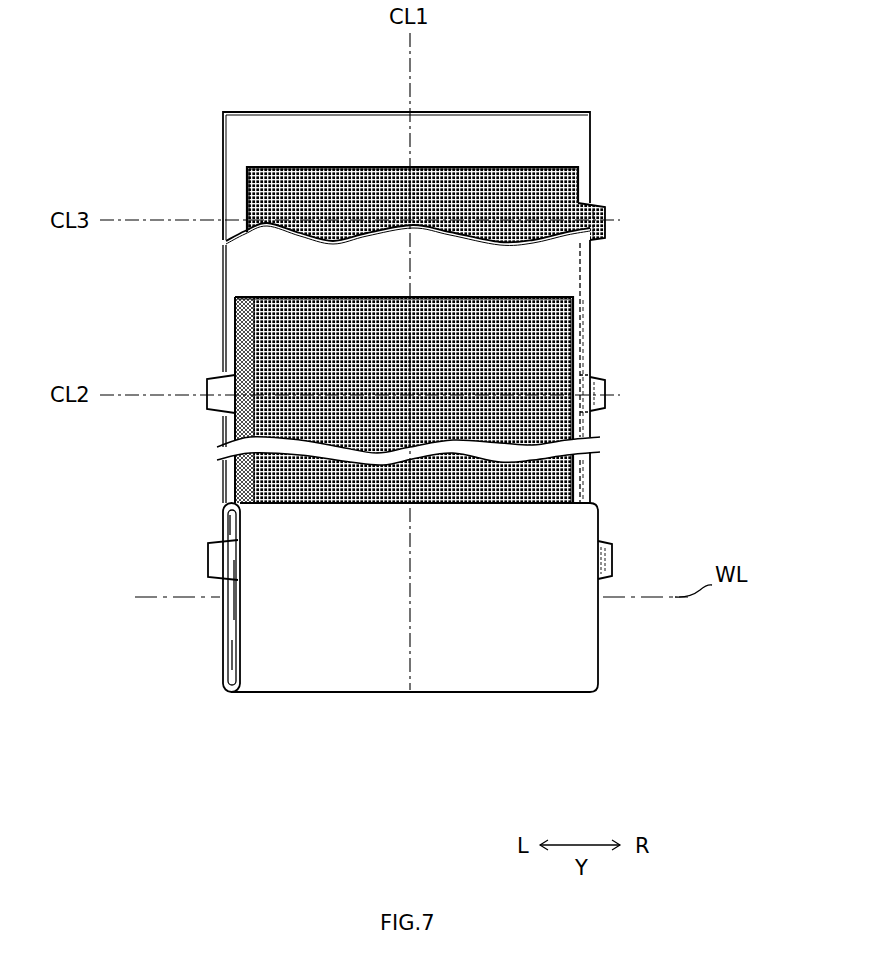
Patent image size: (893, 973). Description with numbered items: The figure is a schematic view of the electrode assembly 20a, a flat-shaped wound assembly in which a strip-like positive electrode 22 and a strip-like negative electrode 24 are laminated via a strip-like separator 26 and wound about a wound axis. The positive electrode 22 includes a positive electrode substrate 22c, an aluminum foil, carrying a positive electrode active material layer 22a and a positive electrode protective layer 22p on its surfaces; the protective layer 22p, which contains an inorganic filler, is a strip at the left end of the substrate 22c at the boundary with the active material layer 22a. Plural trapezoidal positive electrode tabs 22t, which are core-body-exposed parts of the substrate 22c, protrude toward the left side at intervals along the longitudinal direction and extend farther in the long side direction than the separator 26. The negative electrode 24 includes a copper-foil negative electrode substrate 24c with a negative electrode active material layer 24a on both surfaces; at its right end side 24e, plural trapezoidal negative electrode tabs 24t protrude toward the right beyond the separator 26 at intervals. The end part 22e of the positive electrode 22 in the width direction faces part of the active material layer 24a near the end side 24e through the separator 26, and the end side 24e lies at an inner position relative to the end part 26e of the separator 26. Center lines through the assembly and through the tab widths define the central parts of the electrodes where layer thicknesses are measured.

The electrode assembly 20a is at (467, 672).
The positive electrode 22 is at (120, 332).
The positive electrode active material layer 22a is at (288, 352).
The positive electrode protective layer 22p is at (235, 315).
The positive electrode tabs 22t is at (213, 387).
The positive electrode substrate 22c is at (232, 433).
The end part of the positive electrode 22e is at (570, 347).
The negative electrode 24 is at (685, 216).
The negative electrode active material layer 24a is at (565, 190).
The end side of the negative electrode 24e is at (580, 180).
The negative electrode tabs 24t is at (608, 228).
The negative electrode substrate 24c is at (583, 310).
The separator 26 is at (235, 137).
The end part of the separator 26e is at (590, 270).